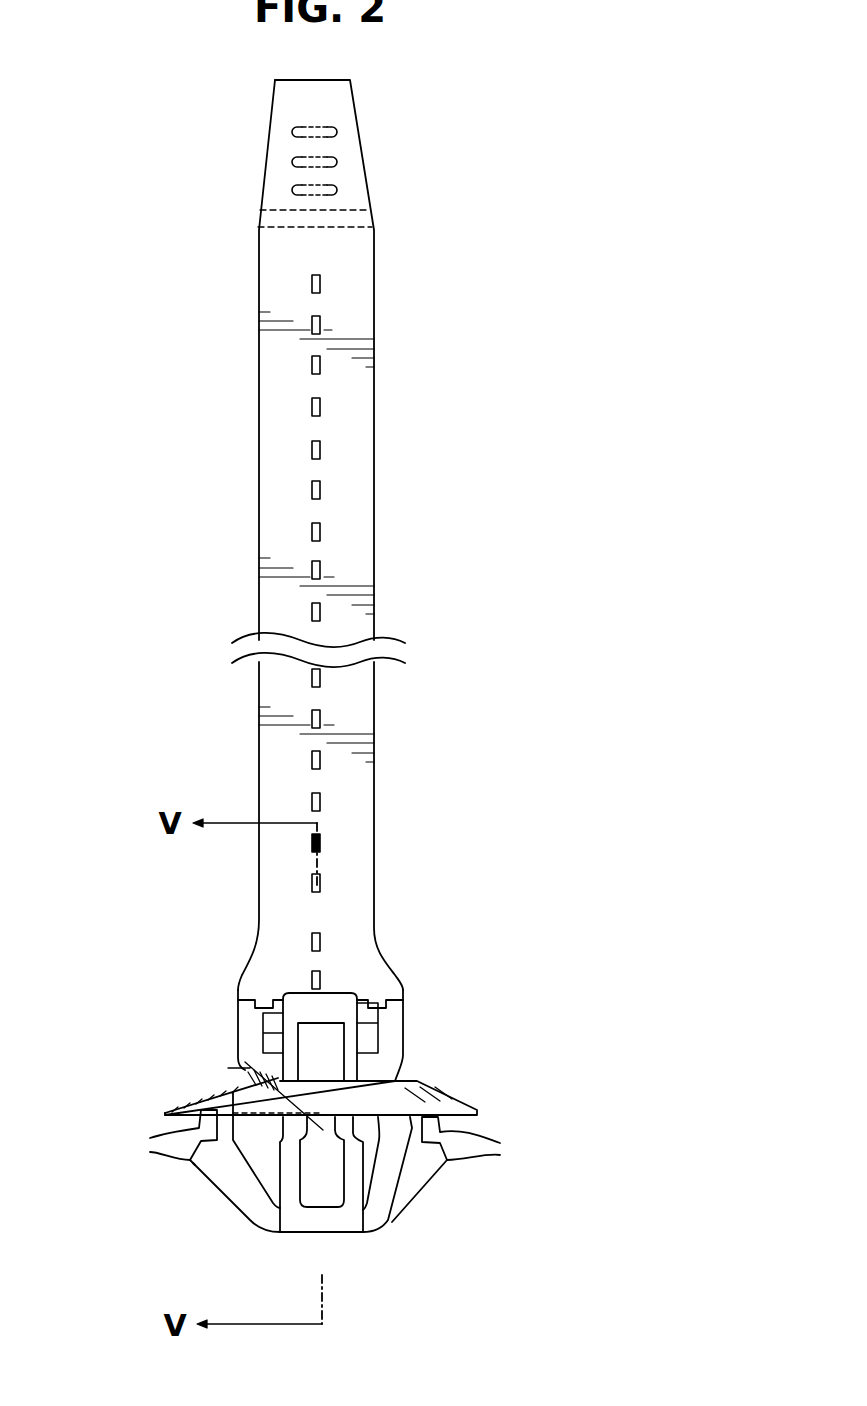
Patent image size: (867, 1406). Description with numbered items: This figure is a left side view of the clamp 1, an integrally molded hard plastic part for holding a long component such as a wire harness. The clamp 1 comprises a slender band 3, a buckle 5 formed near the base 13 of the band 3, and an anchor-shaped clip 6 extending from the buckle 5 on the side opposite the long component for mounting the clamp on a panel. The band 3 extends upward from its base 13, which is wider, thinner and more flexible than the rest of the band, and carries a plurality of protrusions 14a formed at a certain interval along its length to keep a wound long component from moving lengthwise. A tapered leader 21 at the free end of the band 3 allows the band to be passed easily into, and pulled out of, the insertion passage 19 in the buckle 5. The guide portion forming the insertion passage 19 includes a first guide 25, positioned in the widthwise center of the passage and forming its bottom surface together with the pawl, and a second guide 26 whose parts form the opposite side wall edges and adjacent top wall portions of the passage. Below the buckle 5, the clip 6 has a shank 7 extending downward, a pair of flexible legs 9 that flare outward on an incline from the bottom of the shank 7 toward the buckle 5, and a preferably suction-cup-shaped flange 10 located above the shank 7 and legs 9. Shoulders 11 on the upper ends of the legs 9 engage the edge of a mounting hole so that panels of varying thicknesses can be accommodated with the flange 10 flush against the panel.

The clamp 1 is at (458, 568).
The slender band 3 is at (383, 791).
The buckle 5 is at (430, 1052).
The anchor-shaped clip 6 is at (167, 1181).
The shank 7 is at (323, 1180).
The legs 9 is at (230, 1195).
The flange 10 is at (458, 1090).
The shoulders 11 is at (160, 1136).
The base of the band 13 is at (380, 982).
The protrusions 14a is at (312, 450).
The insertion passage 19 is at (322, 1008).
The tapered leader 21 is at (341, 147).
The first guide 25 is at (323, 1052).
The second guide 26 is at (268, 1020).